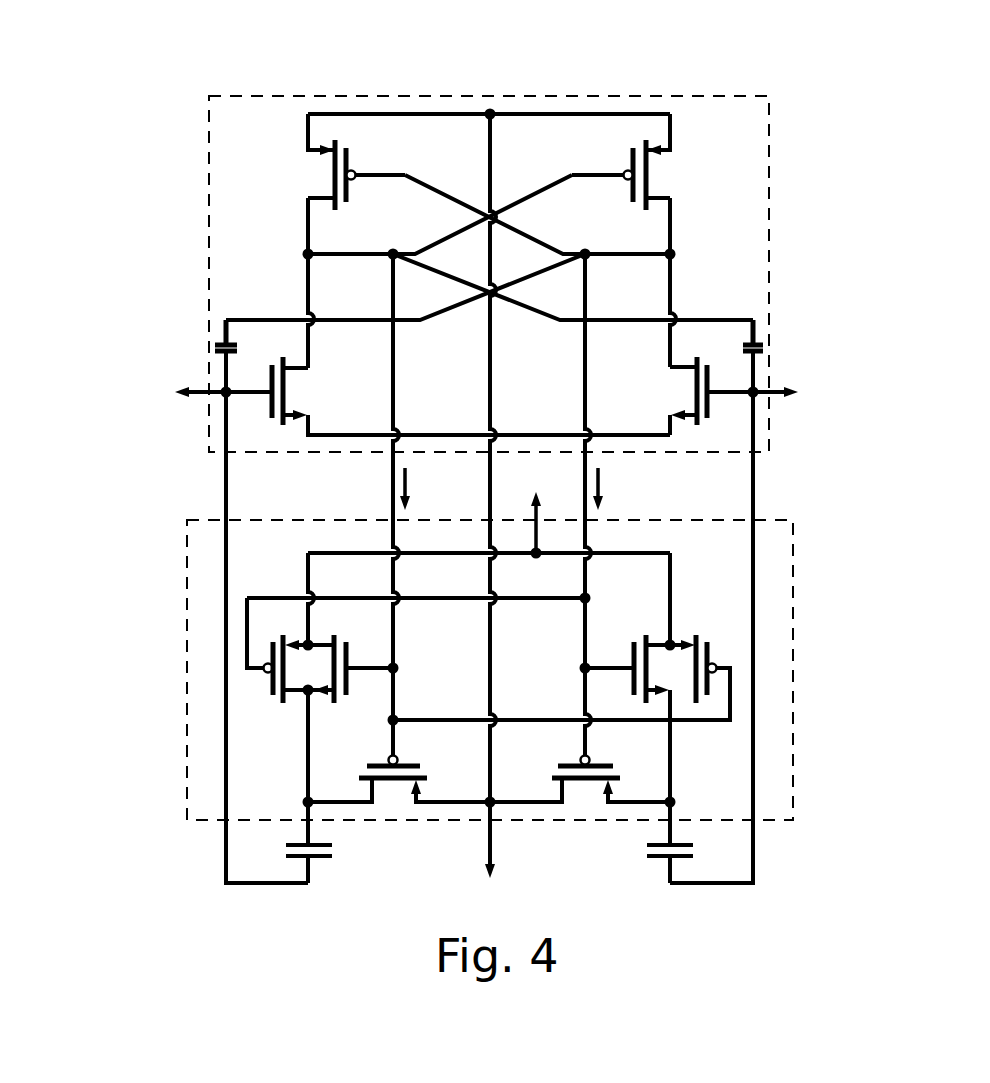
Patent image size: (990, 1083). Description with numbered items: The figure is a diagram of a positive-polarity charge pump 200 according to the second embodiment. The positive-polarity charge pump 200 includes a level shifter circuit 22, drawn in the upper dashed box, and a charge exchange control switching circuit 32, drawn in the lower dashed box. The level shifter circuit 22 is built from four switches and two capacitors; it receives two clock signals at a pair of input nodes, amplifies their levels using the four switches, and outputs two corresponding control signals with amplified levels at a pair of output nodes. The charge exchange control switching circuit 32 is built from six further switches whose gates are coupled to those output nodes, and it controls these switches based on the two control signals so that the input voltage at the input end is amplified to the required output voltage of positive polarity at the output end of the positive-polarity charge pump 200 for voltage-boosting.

The positive-polarity charge pump 200 is at (827, 160).
The level shifter circuit 22 is at (770, 277).
The charge exchange control switching circuit 32 is at (793, 706).